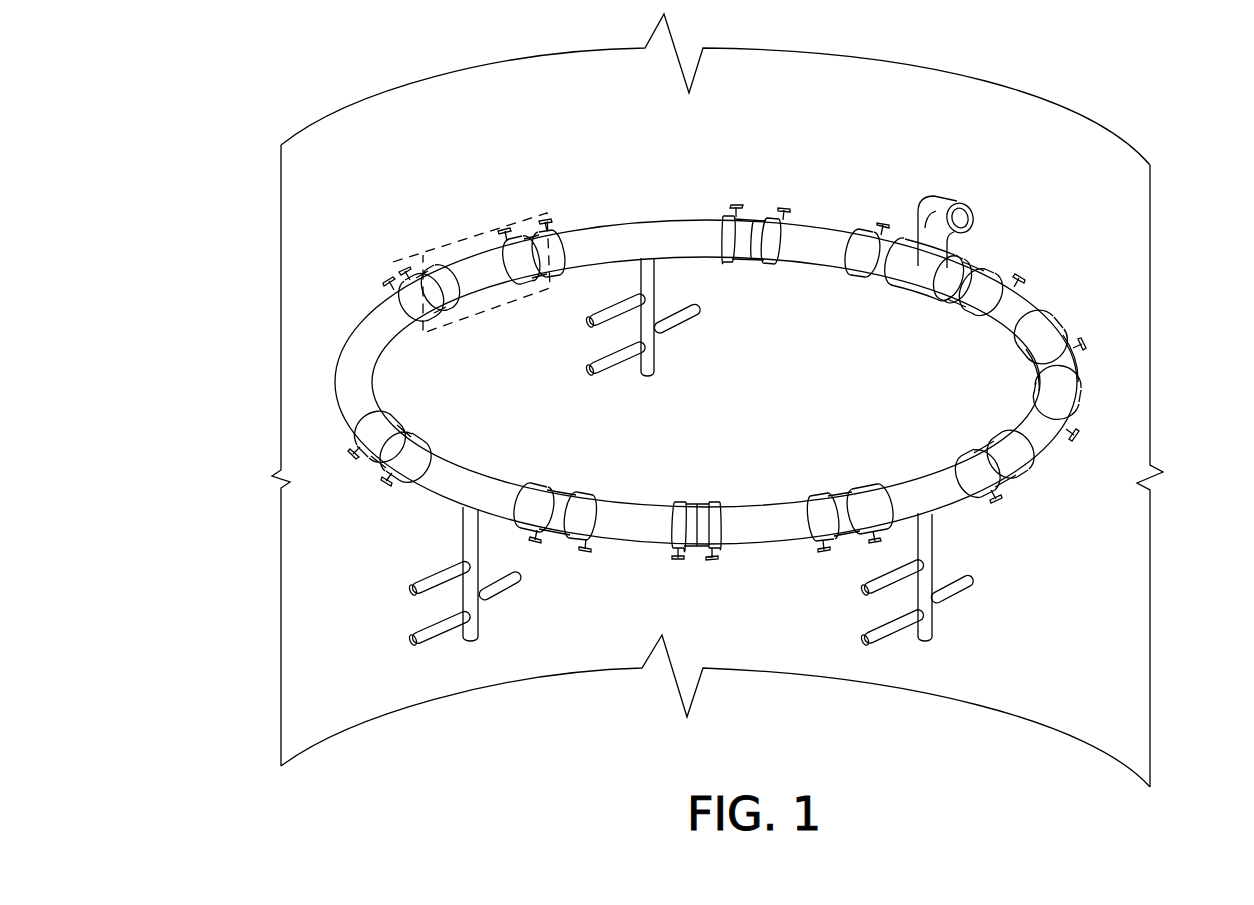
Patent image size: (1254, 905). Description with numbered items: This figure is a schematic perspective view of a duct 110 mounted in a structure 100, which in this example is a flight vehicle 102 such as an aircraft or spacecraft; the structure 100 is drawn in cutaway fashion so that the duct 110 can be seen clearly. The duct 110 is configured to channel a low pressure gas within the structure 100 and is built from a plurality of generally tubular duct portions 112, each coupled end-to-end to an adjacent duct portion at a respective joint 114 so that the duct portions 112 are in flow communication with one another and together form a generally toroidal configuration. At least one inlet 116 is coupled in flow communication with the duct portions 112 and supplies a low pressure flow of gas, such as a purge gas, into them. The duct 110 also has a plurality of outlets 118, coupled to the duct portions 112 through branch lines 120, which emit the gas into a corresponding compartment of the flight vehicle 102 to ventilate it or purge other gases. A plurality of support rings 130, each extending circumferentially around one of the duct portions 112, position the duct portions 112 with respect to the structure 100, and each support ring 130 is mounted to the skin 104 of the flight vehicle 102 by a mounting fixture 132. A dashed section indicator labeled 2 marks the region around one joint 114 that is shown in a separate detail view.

The structure 100 is at (1098, 128).
The flight vehicle 102 is at (1131, 421).
The skin 104 is at (867, 122).
The duct 110 is at (213, 413).
The duct portions 112 is at (1040, 313).
The joint 114 is at (523, 235).
The inlet 116 is at (948, 200).
The outlet 118 is at (578, 327).
The branch lines 120 is at (645, 367).
The support ring 130 is at (443, 267).
The mounting fixture 132 is at (398, 270).
The section view indicator 2 is at (548, 212).